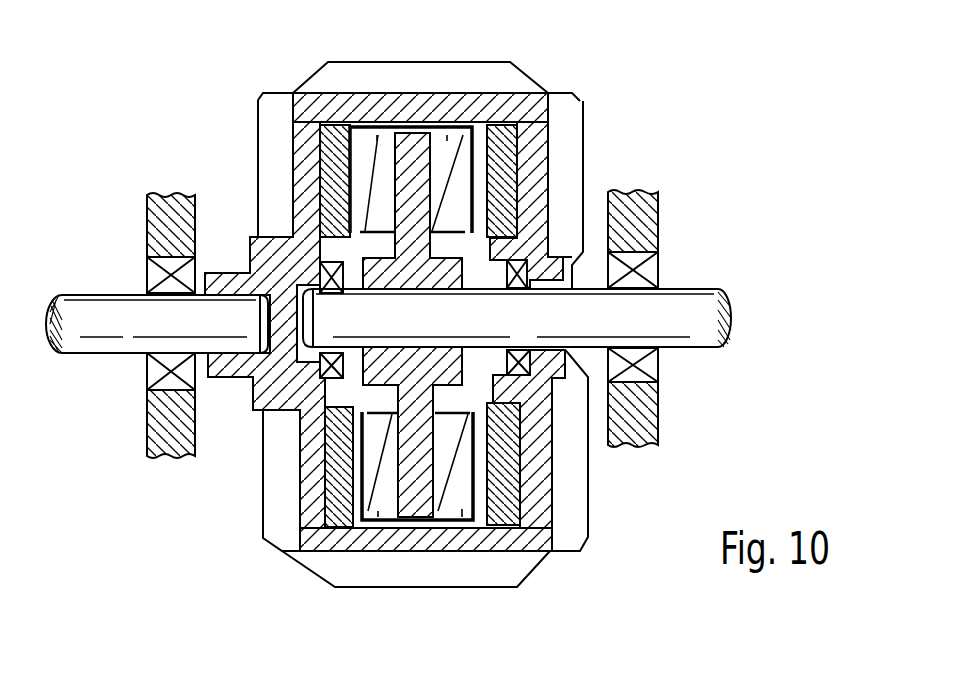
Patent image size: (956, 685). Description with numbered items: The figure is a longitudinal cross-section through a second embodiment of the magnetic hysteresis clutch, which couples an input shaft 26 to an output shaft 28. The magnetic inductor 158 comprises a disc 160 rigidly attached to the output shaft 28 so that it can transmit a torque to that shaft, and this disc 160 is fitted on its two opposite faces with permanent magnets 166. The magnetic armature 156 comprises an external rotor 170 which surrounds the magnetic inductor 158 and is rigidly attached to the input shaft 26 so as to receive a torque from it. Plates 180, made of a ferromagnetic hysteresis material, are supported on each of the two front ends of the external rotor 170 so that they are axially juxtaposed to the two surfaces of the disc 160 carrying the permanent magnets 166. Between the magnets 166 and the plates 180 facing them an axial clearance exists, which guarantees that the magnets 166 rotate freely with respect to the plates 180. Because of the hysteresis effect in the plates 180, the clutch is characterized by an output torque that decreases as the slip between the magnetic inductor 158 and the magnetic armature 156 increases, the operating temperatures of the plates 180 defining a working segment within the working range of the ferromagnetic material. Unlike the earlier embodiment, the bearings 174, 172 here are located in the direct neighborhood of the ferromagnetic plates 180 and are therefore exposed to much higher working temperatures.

The input shaft 26 is at (99, 343).
The output shaft 28 is at (702, 332).
The magnetic armature 156 is at (554, 86).
The magnetic inductor 158 is at (331, 126).
The disc 160 is at (413, 513).
The permanent magnets 166 is at (373, 158).
The external rotor 170 is at (532, 523).
The bearing 172 is at (590, 238).
The bearing 174 is at (282, 413).
The plates 180 is at (332, 168).